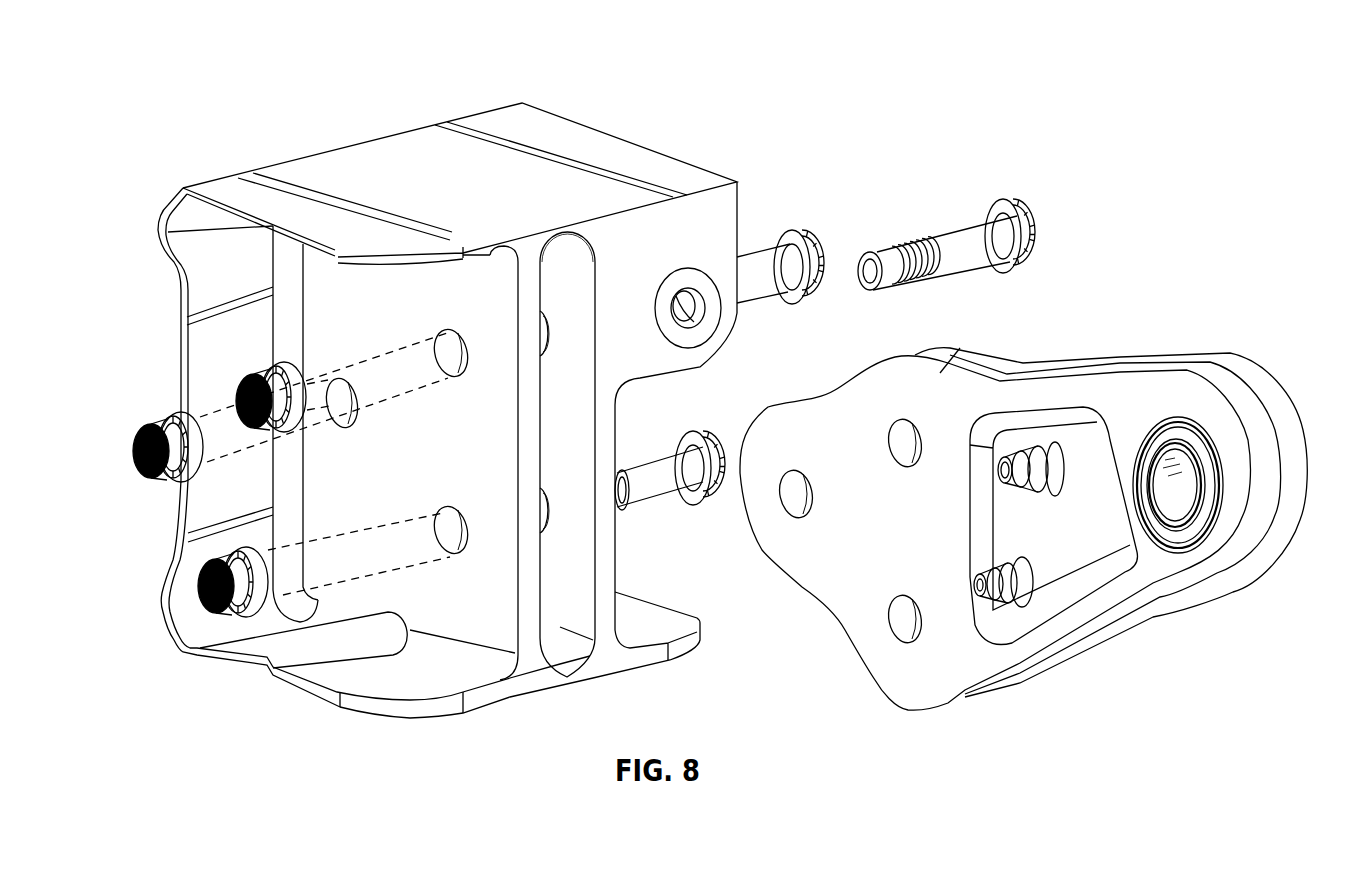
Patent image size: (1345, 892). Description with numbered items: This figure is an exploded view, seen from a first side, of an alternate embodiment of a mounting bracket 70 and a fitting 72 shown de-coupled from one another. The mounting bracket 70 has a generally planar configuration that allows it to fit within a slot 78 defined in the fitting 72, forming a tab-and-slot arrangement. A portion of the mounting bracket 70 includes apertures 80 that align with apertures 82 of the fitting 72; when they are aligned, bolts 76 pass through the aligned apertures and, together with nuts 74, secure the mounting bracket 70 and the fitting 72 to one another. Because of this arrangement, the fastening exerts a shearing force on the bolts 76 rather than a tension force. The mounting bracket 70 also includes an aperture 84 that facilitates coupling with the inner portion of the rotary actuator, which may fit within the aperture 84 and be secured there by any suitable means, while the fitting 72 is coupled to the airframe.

The mounting bracket 70 is at (1203, 403).
The fitting 72 is at (372, 158).
The nuts 74 is at (166, 420).
The bolts 76 is at (813, 232).
The slot 78 is at (582, 280).
The apertures 80 is at (900, 437).
The apertures 82 is at (445, 338).
The aperture 84 is at (1183, 495).